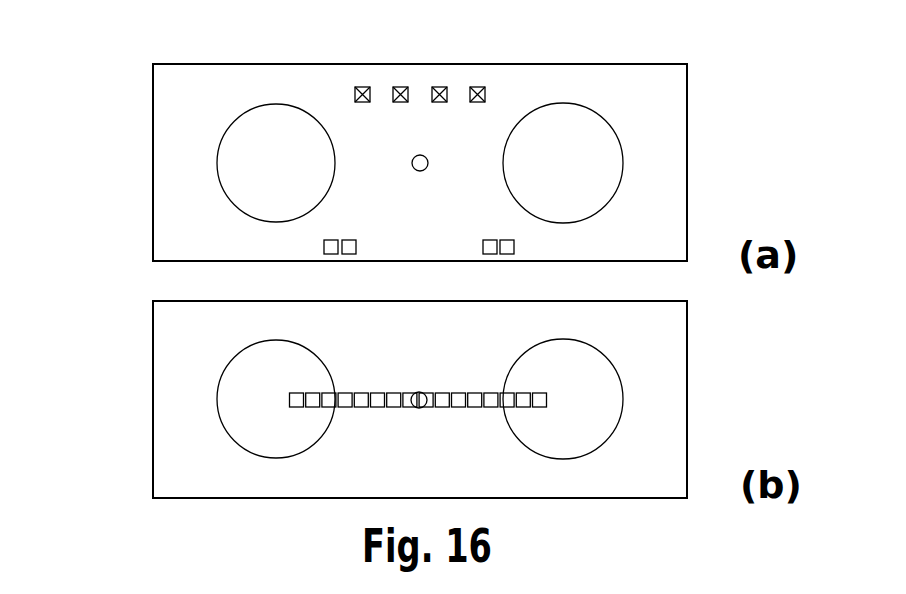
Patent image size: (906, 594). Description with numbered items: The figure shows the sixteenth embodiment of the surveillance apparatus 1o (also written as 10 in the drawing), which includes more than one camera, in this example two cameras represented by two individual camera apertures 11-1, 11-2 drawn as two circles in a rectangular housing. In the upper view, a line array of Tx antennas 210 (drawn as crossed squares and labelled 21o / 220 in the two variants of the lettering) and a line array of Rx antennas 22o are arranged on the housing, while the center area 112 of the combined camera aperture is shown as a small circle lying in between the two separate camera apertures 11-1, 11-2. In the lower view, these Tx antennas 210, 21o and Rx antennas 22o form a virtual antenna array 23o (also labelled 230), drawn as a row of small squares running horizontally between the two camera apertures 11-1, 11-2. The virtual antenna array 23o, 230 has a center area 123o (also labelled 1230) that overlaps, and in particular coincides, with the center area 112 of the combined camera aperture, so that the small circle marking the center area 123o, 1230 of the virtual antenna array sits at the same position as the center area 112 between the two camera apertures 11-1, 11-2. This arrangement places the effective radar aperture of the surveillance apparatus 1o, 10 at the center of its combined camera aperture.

The sensor module layout 10 is at (364, 266).
The surveillance apparatus 1o is at (120, 72).
The camera aperture 11-1 is at (217, 164).
The camera aperture 11-2 is at (623, 163).
The contact pads 220 is at (413, 133).
The Rx antennas 22o is at (364, 102).
The Tx antennas 210 is at (422, 245).
The Tx antennas 21o is at (323, 247).
The center area 112 is at (420, 172).
The row of contact pads 230 is at (418, 438).
The virtual antenna array 23o is at (476, 408).
The central contact with hole 1230 is at (405, 437).
The center area 123o is at (419, 408).